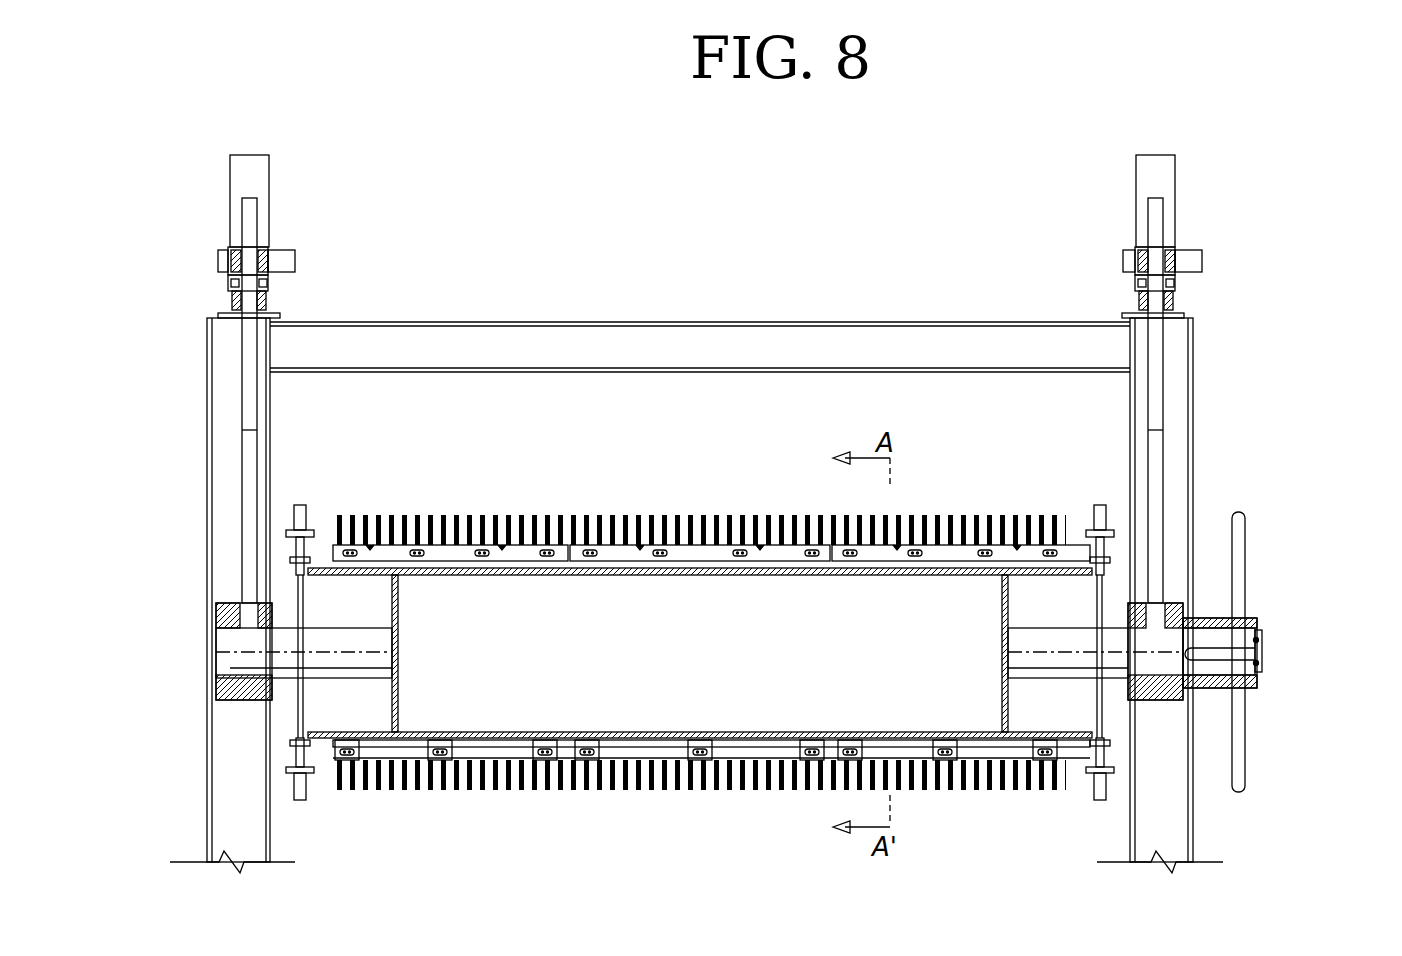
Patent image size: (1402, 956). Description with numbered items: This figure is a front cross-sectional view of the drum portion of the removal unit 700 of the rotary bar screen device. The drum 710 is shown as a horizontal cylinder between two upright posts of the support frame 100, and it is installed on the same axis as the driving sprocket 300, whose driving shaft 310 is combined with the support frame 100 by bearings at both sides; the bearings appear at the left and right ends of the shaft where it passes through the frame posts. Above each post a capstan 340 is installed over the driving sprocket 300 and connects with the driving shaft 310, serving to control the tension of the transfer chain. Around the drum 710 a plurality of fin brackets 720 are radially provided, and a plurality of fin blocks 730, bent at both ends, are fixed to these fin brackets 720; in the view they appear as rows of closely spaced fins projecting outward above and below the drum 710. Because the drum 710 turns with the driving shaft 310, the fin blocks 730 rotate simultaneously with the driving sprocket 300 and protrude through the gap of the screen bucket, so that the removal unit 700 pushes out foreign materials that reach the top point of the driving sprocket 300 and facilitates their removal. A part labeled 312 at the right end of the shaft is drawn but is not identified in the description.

The support frame 100 is at (207, 458).
The driving sprocket 300 is at (300, 520).
The driving shaft 310 is at (230, 647).
The handle 312 is at (1240, 565).
The capstan 340 is at (228, 255).
The removal unit 700 is at (700, 675).
The drum 710 is at (480, 575).
The fin brackets 720 is at (688, 555).
The fin blocks 730 is at (468, 790).